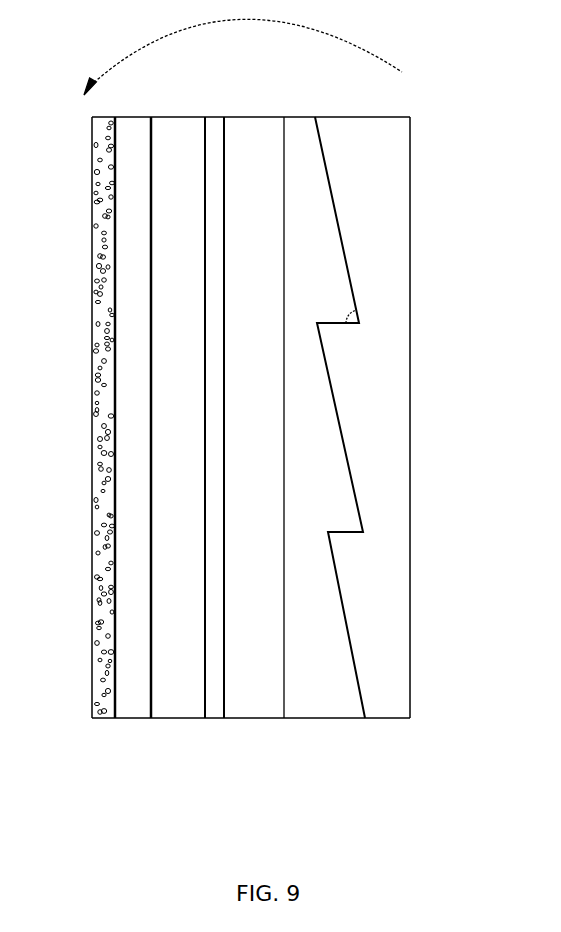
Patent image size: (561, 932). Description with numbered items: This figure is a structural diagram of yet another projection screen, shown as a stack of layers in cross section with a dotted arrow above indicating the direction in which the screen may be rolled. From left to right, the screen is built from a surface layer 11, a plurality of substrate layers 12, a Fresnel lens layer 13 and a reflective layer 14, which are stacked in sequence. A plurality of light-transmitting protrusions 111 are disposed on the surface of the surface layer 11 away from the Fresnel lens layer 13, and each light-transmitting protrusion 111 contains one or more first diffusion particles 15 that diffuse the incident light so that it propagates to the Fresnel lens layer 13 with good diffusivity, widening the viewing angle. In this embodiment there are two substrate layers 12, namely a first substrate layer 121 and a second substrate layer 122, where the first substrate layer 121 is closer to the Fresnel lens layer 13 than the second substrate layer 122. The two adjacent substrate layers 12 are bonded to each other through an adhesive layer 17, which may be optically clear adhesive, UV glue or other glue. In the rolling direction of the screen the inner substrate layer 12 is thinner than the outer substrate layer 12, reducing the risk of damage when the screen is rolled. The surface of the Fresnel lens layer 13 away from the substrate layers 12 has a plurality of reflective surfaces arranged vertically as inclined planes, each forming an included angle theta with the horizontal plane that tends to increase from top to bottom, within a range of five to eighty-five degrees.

The surface layer 11 is at (130, 702).
The light-transmitting protrusions 111 is at (92, 362).
The substrate layer 12 is at (230, 479).
The first substrate layer 121 is at (253, 683).
The second substrate layer 122 is at (178, 690).
The Fresnel lens layer 13 is at (320, 697).
The reflective layer 14 is at (382, 685).
The first diffusion particle 15 is at (92, 470).
The adhesive layer 17 is at (213, 702).